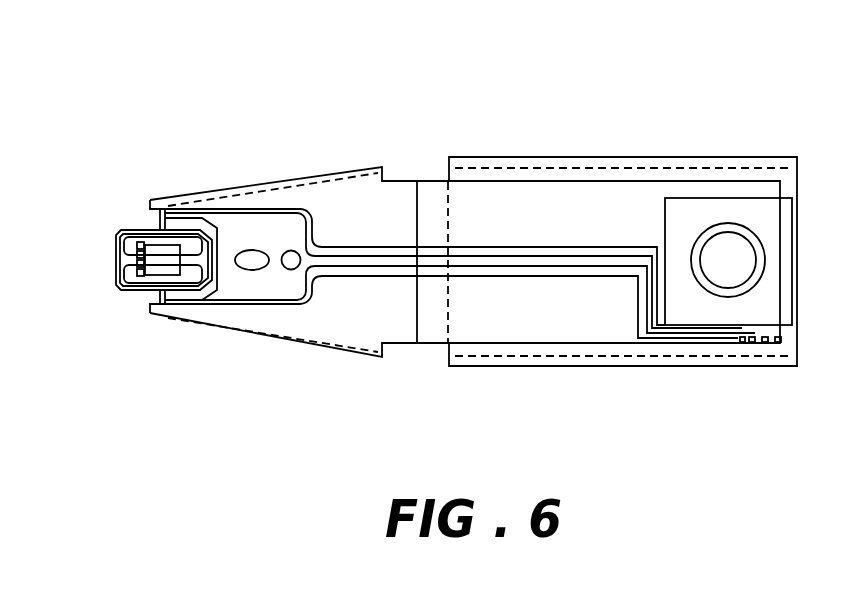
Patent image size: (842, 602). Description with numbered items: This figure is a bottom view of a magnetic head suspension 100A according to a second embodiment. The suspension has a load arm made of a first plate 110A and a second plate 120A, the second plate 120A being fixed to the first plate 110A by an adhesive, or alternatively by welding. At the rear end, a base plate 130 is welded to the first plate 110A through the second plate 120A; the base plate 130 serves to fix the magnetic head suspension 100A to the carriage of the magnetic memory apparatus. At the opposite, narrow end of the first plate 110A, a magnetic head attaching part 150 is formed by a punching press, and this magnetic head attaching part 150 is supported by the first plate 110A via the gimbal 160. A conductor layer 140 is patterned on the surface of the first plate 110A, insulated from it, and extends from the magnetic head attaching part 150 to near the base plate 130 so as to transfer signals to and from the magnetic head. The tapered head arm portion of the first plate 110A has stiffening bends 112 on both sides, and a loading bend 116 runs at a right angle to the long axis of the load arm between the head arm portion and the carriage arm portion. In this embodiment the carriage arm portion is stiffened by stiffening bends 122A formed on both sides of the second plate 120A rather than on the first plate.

The magnetic head suspension 100A is at (424, 94).
The first plate 110A is at (325, 313).
The stiffening bends 112 is at (238, 187).
The loading bend 116 is at (416, 313).
The second plate 120A is at (522, 348).
The stiffening bends 122A is at (655, 162).
The base plate 130 is at (770, 215).
The conductor layer 140 is at (244, 314).
The magnetic head attaching part 150 is at (156, 256).
The gimbal 160 is at (94, 314).